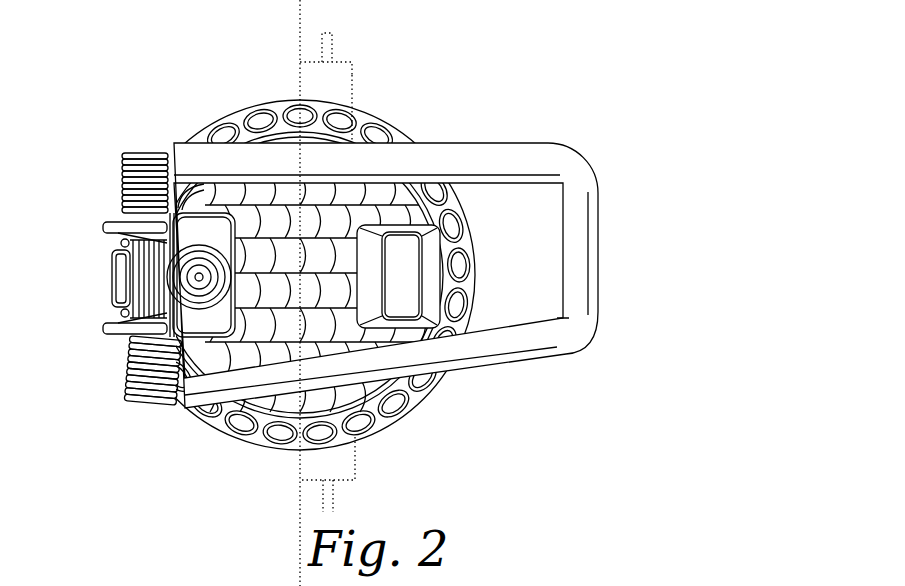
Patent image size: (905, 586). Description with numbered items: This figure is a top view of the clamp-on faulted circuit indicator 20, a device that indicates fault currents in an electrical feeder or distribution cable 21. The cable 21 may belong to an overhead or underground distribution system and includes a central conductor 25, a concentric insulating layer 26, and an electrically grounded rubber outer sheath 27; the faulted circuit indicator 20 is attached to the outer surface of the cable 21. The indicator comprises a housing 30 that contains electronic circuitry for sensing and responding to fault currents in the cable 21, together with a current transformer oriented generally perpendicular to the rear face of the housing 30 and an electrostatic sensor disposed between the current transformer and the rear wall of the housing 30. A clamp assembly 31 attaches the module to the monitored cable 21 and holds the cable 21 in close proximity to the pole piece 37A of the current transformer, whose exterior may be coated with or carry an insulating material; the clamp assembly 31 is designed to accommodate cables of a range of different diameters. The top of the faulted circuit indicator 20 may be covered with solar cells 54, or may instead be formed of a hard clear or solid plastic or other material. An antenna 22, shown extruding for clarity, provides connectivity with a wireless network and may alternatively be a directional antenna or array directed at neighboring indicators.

The faulted circuit indicator 20 is at (230, 443).
The electrical feeder or distribution cable 21 is at (357, 458).
The antenna 22 is at (127, 272).
The central conductor 25 is at (330, 43).
The concentric insulating layer 26 is at (350, 62).
The electrically grounded rubber outer sheath 27 is at (345, 90).
The housing 30 is at (423, 402).
The clamp assembly 31 is at (520, 147).
The pole piece 37A is at (430, 257).
The solar cells 54 is at (207, 187).